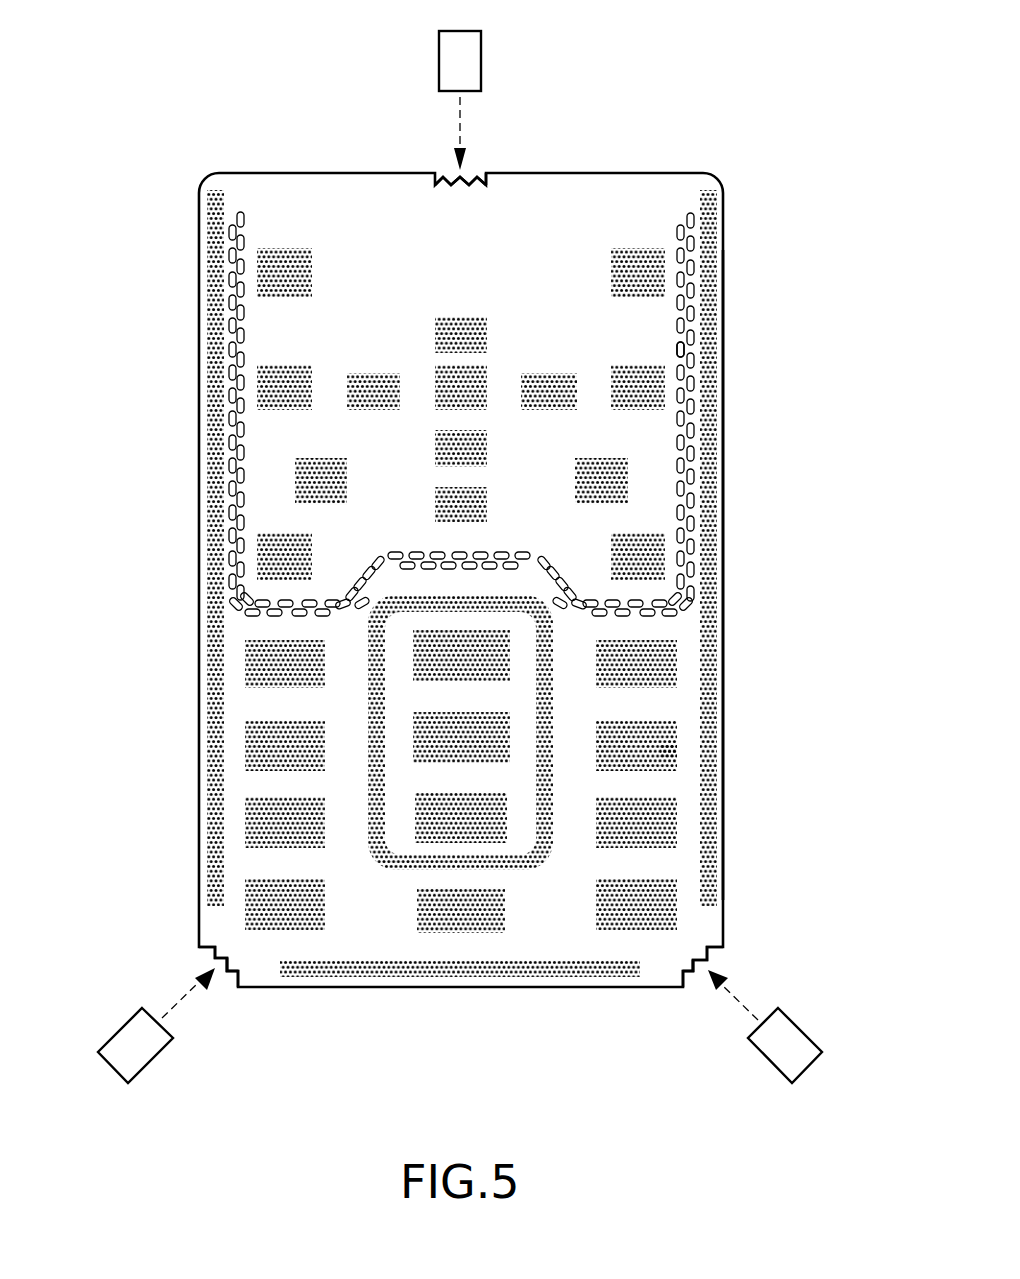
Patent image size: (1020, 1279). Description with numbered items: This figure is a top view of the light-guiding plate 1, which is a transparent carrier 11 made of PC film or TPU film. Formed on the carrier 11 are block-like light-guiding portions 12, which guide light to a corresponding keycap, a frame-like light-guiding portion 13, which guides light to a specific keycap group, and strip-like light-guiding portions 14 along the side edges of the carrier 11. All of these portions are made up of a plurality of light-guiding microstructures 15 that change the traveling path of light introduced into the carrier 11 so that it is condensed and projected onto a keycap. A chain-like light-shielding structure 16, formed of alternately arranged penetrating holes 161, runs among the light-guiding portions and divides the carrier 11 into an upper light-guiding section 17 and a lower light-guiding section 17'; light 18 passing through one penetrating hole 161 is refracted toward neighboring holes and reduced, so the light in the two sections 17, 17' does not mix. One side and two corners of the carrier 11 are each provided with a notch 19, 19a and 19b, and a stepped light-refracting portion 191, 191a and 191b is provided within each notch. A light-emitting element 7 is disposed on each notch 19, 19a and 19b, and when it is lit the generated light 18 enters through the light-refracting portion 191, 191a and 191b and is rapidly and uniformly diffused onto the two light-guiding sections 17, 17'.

The light-guiding plate 1 is at (625, 170).
The light-emitting element 7 is at (447, 55).
The carrier 11 is at (724, 233).
The block-like light-guiding portion 12 is at (677, 735).
The frame-like light-guiding portion 13 is at (402, 870).
The strip-like light-guiding portion 14 is at (713, 652).
The light-guiding microstructure 15 is at (673, 753).
The chain-like light-shielding structure 16 is at (690, 328).
The penetrating hole 161 is at (690, 355).
The light-guiding section 17 is at (461, 345).
The light-guiding section 17' is at (424, 850).
The light 18 is at (462, 117).
The notch 19 is at (481, 162).
The notch 19a is at (701, 987).
The notch 19b is at (222, 988).
The stepped light-refracting portion 191 is at (447, 176).
The stepped light-refracting portion 191a is at (707, 952).
The stepped light-refracting portion 191b is at (213, 953).